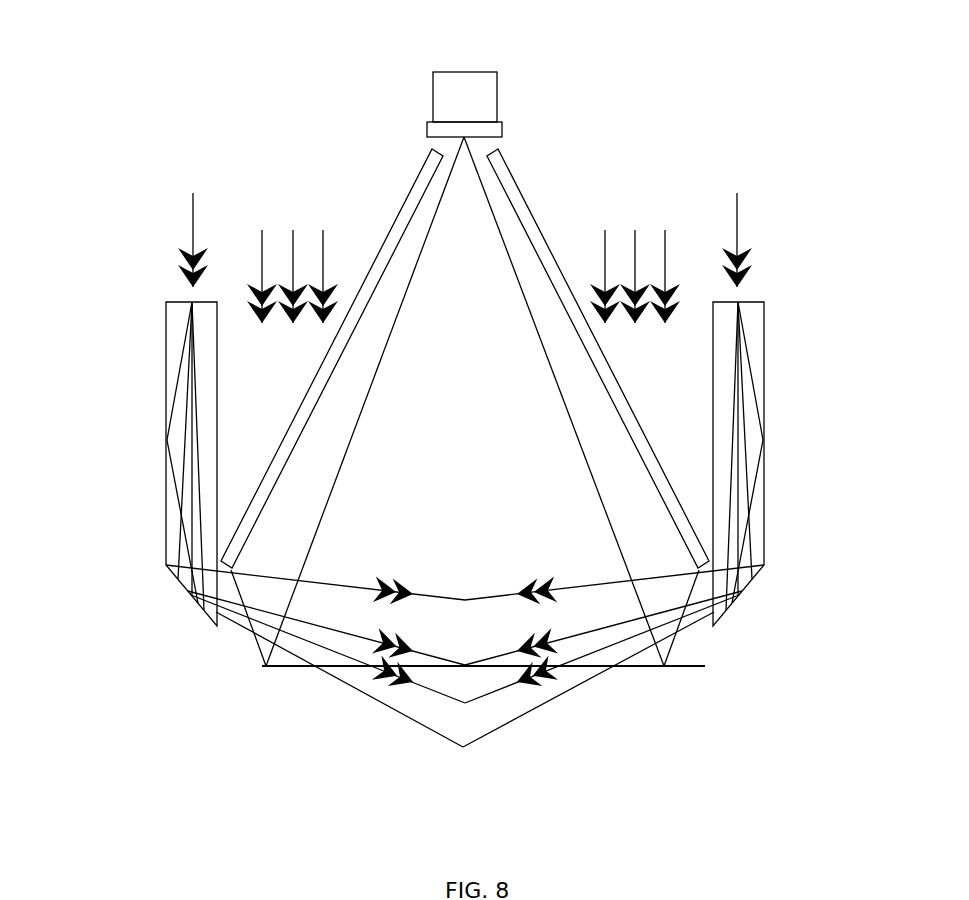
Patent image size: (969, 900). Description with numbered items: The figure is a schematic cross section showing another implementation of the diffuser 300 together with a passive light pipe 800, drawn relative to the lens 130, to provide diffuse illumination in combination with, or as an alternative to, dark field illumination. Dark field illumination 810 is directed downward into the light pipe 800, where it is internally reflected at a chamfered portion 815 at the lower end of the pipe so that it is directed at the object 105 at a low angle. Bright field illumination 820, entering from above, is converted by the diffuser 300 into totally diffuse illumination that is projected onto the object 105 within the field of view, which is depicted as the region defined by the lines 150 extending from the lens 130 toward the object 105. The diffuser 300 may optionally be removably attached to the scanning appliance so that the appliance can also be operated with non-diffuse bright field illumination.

The object 105 is at (677, 667).
The lens 130 is at (497, 88).
The lines 150 is at (345, 457).
The diffuser 300 is at (407, 190).
The passive light pipe 800 is at (166, 380).
The dark field illumination 810 is at (192, 205).
The chamfered portion 815 is at (190, 592).
The bright field illumination 820 is at (297, 150).